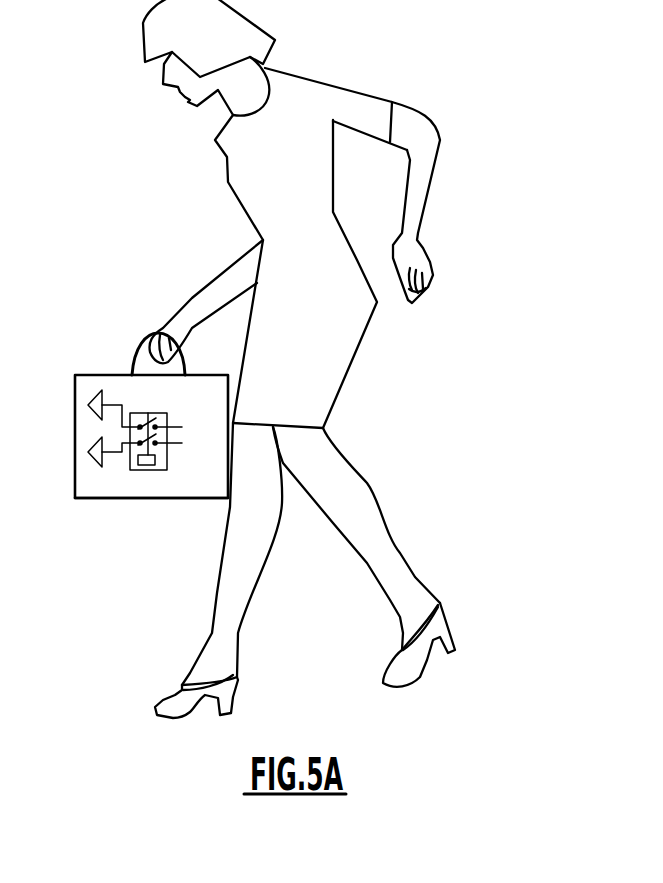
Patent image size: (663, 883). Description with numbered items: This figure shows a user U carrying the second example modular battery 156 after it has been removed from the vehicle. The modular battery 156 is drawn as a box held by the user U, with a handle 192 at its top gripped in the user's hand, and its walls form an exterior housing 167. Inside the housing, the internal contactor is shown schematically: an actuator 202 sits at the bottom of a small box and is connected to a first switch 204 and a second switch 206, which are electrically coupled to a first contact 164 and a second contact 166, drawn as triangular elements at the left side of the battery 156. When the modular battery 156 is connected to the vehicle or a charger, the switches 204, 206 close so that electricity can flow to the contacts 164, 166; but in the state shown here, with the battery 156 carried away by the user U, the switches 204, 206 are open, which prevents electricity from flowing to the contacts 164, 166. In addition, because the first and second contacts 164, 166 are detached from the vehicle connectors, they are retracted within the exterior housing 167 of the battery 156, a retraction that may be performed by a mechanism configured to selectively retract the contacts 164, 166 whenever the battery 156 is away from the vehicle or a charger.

The user U is at (338, 59).
The modular battery 156 is at (155, 515).
The exterior housing 167 is at (102, 499).
The handle 192 is at (134, 358).
The first contact 164 is at (100, 391).
The second contact 166 is at (100, 437).
The first switch 204 is at (149, 420).
The second switch 206 is at (182, 443).
The actuator 202 is at (150, 466).